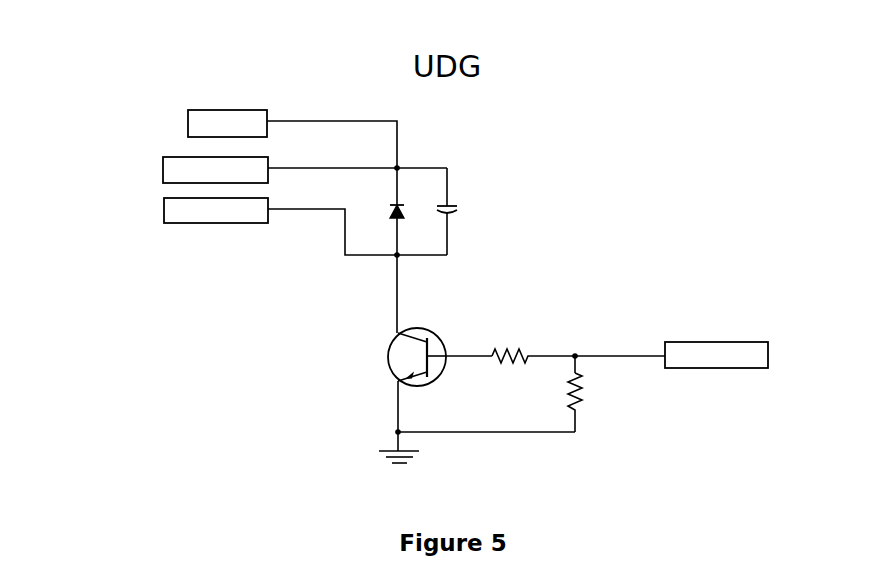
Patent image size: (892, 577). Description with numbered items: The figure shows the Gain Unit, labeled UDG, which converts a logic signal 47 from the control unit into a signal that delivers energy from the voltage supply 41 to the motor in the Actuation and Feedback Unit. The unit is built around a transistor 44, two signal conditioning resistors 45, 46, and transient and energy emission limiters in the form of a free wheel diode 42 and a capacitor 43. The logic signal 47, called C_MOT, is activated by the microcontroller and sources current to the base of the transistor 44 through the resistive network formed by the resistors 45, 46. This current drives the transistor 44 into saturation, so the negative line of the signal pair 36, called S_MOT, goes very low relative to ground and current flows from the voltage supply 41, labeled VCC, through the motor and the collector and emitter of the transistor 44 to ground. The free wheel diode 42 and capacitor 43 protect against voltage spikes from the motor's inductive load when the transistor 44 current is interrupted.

The signal pair 36 is at (146, 174).
The voltage supply 41 is at (172, 121).
The free wheel diode 42 is at (376, 207).
The capacitor 43 is at (466, 222).
The transistor 44 is at (368, 358).
The signal conditioning resistor 45 is at (497, 339).
The signal conditioning resistor 46 is at (594, 399).
The logic signal 47 is at (733, 330).